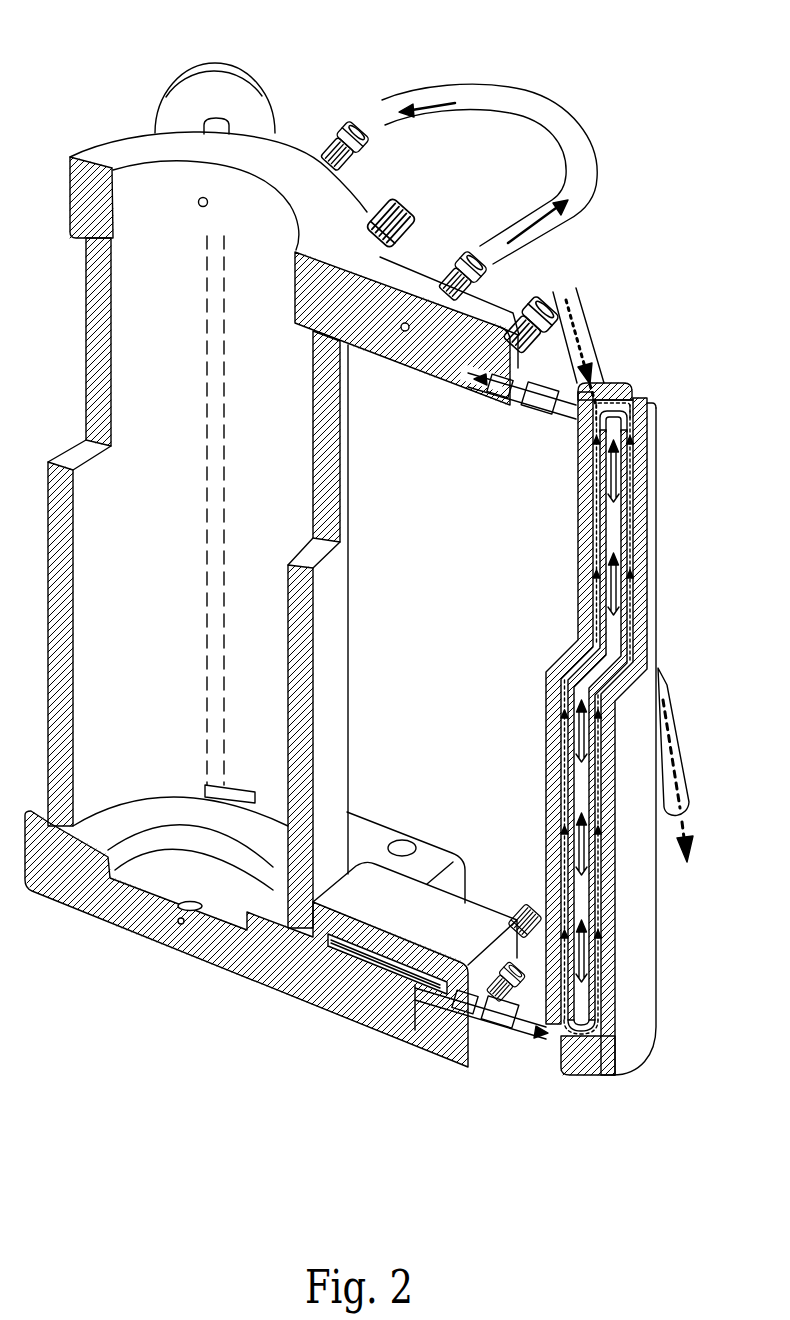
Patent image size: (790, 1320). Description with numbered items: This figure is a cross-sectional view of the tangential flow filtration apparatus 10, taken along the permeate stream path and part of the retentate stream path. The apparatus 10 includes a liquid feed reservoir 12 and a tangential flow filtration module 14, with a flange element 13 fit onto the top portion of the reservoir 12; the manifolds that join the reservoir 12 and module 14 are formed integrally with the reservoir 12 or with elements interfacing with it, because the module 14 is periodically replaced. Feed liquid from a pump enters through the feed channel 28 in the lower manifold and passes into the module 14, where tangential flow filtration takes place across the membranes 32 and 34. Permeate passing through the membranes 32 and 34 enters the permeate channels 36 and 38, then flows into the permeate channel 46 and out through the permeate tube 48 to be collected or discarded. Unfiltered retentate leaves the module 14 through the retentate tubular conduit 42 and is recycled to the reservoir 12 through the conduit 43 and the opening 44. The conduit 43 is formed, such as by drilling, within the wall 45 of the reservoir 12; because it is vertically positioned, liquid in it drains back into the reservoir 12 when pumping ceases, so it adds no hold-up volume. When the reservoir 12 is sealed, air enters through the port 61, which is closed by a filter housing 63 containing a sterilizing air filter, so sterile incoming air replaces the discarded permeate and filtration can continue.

The tangential flow filtration apparatus 10 is at (658, 275).
The liquid feed reservoir 12 is at (332, 632).
The flange element 13 is at (280, 165).
The tangential flow filtration module 14 is at (650, 965).
The feed channel 28 is at (407, 1030).
The membrane 32 is at (620, 622).
The membrane 34 is at (610, 530).
The permeate channel 36 is at (633, 650).
The permeate channel 38 is at (578, 655).
The retentate tubular conduit 42 is at (578, 199).
The conduit 43 is at (223, 462).
The opening 44 is at (230, 792).
The wall 45 is at (337, 468).
The permeate channel 46 is at (538, 422).
The permeate tube 48 is at (680, 758).
The port 61 is at (201, 198).
The filter housing 63 is at (220, 90).